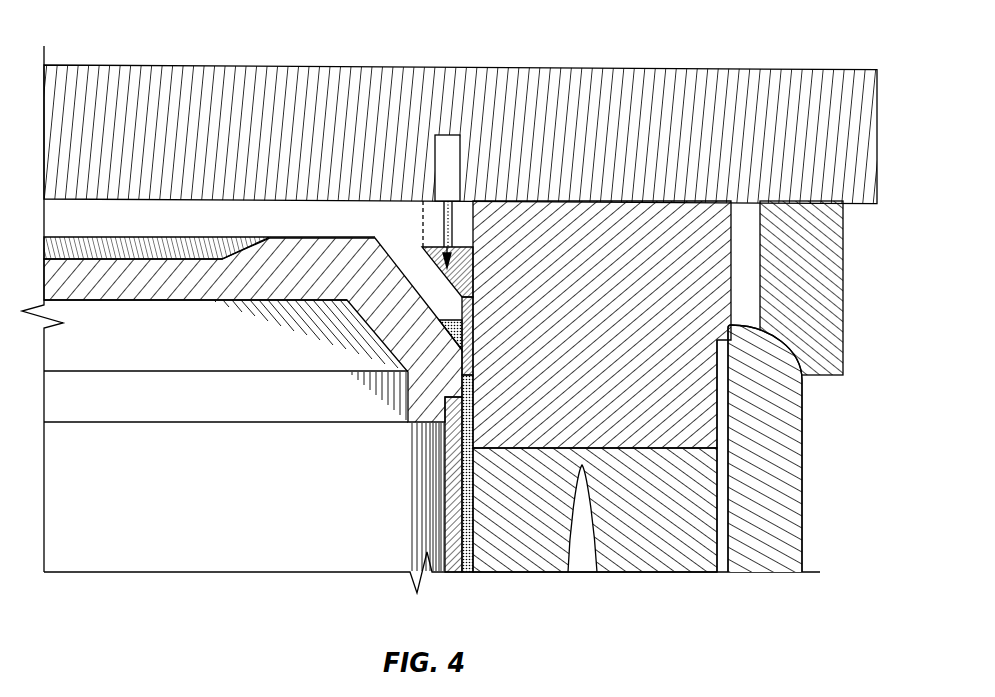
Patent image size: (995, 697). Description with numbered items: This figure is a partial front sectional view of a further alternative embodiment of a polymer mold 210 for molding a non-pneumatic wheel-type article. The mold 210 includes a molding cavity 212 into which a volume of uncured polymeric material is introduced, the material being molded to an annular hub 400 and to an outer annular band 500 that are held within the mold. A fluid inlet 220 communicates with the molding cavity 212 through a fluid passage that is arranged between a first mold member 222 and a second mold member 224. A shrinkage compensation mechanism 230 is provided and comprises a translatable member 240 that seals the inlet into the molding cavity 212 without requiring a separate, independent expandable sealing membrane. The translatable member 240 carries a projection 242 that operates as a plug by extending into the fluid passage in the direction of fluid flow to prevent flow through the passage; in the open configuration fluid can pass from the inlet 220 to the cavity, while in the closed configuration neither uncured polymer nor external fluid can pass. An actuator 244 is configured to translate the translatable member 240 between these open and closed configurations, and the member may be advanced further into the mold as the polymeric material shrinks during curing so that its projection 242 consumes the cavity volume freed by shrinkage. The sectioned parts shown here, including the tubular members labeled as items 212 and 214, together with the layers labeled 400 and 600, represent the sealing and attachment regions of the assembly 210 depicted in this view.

The mold 210 is at (756, 50).
The molding cavity 212 is at (463, 525).
The second tubular member 214 is at (223, 429).
The fluid inlet 220 is at (407, 252).
The first mold member 222 is at (333, 252).
The second mold member 224 is at (448, 440).
The shrinkage compensation mechanism 230 is at (520, 180).
The translatable member 240 is at (463, 262).
The projection 242 is at (467, 346).
The actuator 244 is at (455, 150).
The annular hub 400 is at (445, 488).
The outer annular band 500 is at (800, 482).
The sealant 600 is at (455, 328).